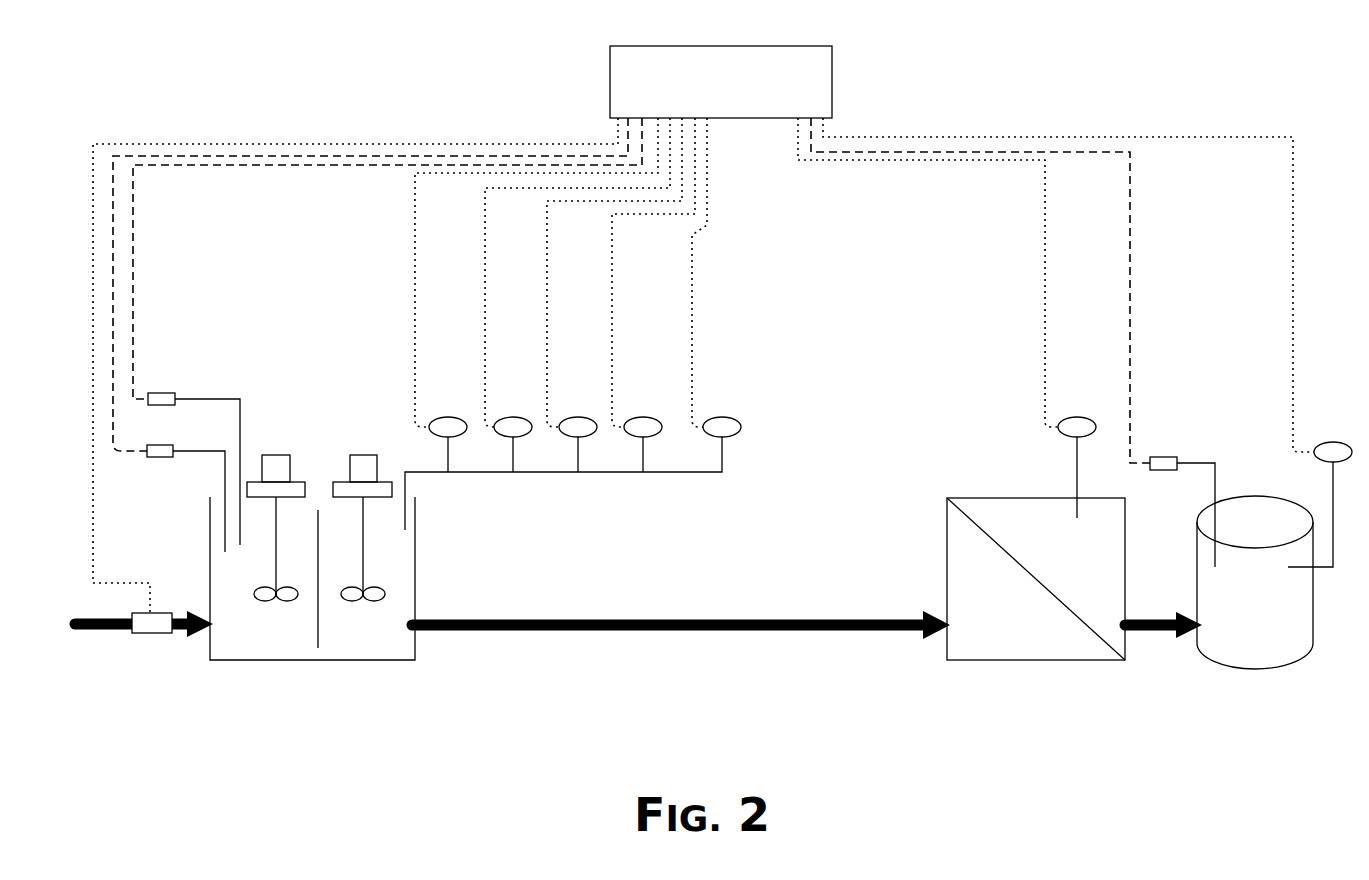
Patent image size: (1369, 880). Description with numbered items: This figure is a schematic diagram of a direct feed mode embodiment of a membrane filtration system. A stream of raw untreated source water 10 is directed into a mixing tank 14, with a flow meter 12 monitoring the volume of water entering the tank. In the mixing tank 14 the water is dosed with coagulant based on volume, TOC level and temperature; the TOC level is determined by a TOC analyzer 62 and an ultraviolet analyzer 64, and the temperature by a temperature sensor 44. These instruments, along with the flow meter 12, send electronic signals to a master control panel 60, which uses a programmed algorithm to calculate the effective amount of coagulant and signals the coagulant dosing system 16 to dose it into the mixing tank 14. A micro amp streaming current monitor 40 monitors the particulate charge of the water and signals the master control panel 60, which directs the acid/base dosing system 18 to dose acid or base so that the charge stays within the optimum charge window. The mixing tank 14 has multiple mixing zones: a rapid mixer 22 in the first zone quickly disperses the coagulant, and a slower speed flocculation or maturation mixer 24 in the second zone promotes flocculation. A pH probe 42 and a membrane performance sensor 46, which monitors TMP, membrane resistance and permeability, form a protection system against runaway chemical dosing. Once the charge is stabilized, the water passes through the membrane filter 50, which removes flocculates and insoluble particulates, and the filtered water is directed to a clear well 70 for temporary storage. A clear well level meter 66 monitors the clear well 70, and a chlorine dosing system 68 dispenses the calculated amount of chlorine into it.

The source water 10 is at (102, 642).
The flow meter 12 is at (145, 633).
The mixing tank 14 is at (320, 670).
The coagulant dosing system 16 is at (157, 457).
The acid/base dosing system 18 is at (162, 393).
The rapid mixer 22 is at (276, 445).
The flocculation or maturation mixer 24 is at (363, 445).
The micro amp streaming current monitor 40 is at (448, 407).
The pH probe 42 is at (513, 407).
The temperature sensor 44 is at (578, 407).
The membrane performance sensor 46 is at (1077, 407).
The membrane filter 50 is at (1043, 670).
The master control panel 60 is at (712, 94).
The TOC analyzer 62 is at (643, 407).
The UV 254 analyzer 64 is at (722, 407).
The clear well level meter 66 is at (1333, 432).
The chlorine dosing system 68 is at (1163, 447).
The clear well 70 is at (1241, 631).